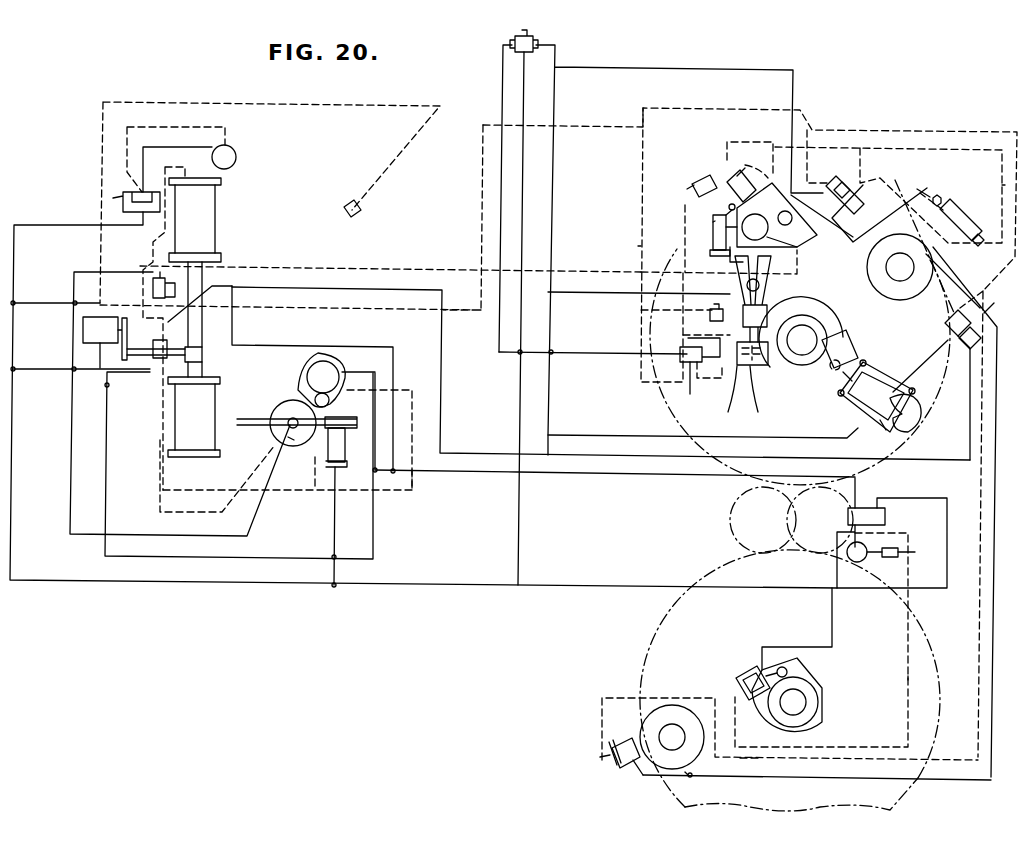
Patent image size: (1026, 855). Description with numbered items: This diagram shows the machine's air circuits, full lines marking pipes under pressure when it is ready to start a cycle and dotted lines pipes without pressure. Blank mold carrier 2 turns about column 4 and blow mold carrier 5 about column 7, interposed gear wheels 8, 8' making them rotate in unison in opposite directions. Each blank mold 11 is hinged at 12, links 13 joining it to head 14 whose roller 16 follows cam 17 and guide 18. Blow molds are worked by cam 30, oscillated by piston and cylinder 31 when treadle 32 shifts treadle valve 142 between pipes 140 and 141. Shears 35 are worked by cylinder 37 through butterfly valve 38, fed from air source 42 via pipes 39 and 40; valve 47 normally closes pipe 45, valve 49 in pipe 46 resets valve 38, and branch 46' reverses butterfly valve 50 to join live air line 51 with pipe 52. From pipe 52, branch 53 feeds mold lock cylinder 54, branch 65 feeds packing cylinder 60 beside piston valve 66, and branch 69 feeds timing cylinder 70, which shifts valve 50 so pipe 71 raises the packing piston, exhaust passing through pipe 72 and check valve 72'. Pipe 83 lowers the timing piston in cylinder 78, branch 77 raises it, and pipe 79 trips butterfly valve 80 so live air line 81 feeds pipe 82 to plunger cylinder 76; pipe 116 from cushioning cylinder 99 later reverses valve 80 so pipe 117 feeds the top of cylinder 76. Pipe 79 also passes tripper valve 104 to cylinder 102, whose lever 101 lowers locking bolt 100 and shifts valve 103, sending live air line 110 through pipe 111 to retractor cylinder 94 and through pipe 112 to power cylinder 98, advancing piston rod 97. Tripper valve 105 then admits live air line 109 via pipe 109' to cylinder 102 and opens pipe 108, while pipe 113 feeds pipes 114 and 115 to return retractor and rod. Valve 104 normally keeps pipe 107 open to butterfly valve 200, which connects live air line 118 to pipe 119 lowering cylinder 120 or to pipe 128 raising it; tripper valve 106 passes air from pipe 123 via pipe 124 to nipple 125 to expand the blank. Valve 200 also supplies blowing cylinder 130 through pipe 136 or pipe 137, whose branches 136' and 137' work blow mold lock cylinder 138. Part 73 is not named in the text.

The blank mold carrier 2 is at (873, 472).
The column 4 is at (802, 356).
The blow mold carrier 5 is at (650, 657).
The column 7 is at (808, 705).
The gear wheel 8 is at (866, 501).
The gear wheel 8' is at (771, 520).
The blank mold 11 is at (922, 406).
The hinge 12 is at (884, 428).
The links 13 is at (905, 375).
The head 14 is at (858, 380).
The roller 16 is at (832, 372).
The cam 17 is at (826, 315).
The guide 18 is at (853, 334).
The cam 30 is at (810, 728).
The piston and cylinder 31 is at (740, 679).
The treadle 32 is at (893, 553).
The shears 35 is at (770, 278).
The cylinder 37 is at (756, 366).
The valve 38 is at (701, 389).
The pipe 39 is at (731, 399).
The pipe 40 is at (761, 399).
The source of compressed air 42 is at (600, 351).
The pipe 45 is at (685, 210).
The pipe 46 is at (662, 359).
The branch pipe 46' is at (615, 244).
The valve 47 is at (688, 187).
The valve 49 is at (710, 320).
The butterfly valve 50 is at (842, 183).
The live air line 51 is at (795, 86).
The pipe 52 is at (861, 158).
The branch 53 is at (736, 172).
The mold lock cylinder 54 is at (752, 182).
The cylinder 60 is at (790, 250).
The branch 65 is at (722, 198).
The piston valve 66 is at (806, 237).
The branch 69 is at (1002, 185).
The cylinder 70 is at (970, 222).
The pipe 71 is at (879, 213).
The pipe 72 is at (910, 181).
The check valve 72' is at (948, 186).
The link 73 is at (822, 214).
The cylinder 76 is at (237, 157).
The branch 77 is at (730, 262).
The cylinder 78 is at (713, 222).
The pipe 79 is at (441, 270).
The butterfly valve 80 is at (113, 198).
The live air line 81 is at (47, 226).
The pipe 82 is at (176, 147).
The pipe 83 is at (715, 233).
The cylinder 94 is at (340, 366).
The piston rod 97 is at (202, 347).
The power cylinder 98 is at (212, 403).
The cushioning cylinder 99 is at (220, 224).
The locking bolt 100 is at (292, 412).
The lever 101 is at (262, 426).
The cylinder 102 is at (294, 444).
The valve 103 is at (346, 462).
The tripper valve 104 is at (153, 358).
The tripper valve 105 is at (153, 289).
The tripper valve 106 is at (83, 330).
The pipe 107 is at (970, 438).
The pipe 108 is at (347, 291).
The live air line 109 is at (55, 293).
The pipe 109' is at (186, 404).
The live air line 110 is at (335, 530).
The pipe 111 is at (413, 488).
The pipe 112 is at (218, 484).
The pipe 113 is at (290, 345).
The pipe 114 is at (394, 378).
The pipe 115 is at (108, 386).
The pipe 116 is at (174, 318).
The pipe 117 is at (185, 147).
The live air line 118 is at (606, 435).
The pipe 119 is at (940, 258).
The cylinder 120 is at (900, 282).
The pipe 123 is at (100, 371).
The pipe 124 is at (292, 100).
The nipple 125 is at (362, 214).
The pipe 128 is at (959, 239).
The cylinder 130 is at (670, 757).
The pipe 136 is at (817, 788).
The branch 136' is at (705, 785).
The pipe 137 is at (761, 766).
The pipe 137' is at (762, 729).
The cylinder 138 is at (608, 768).
The pipe 140 is at (831, 612).
The pipe 141 is at (908, 676).
The treadle valve 142 is at (863, 543).
The butterfly valve 200 is at (945, 333).